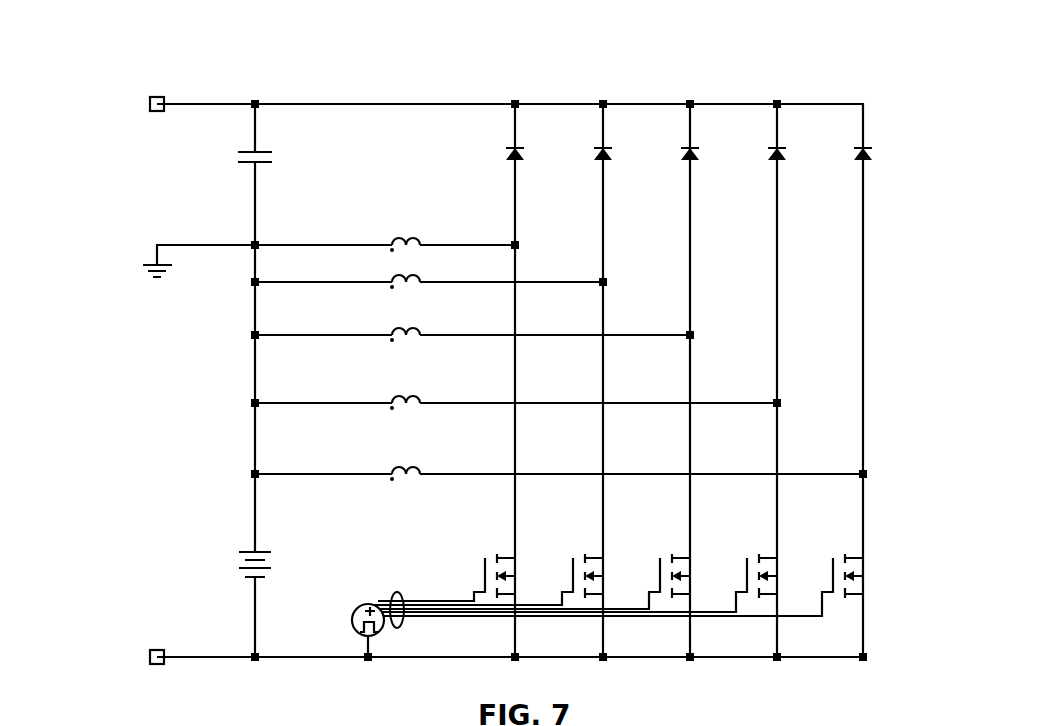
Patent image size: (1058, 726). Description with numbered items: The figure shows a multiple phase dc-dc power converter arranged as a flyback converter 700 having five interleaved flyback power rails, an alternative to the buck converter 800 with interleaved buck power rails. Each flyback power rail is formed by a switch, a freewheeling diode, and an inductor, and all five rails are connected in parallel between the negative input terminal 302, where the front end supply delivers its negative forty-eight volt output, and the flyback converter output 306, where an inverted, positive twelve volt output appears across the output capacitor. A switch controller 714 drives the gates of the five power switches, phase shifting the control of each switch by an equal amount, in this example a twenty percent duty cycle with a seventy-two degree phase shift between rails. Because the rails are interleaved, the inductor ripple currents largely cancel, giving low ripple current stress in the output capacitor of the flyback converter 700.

The flyback converter 700 is at (134, 30).
The flyback converter output 306 is at (160, 97).
The -48V input terminal 302 is at (160, 665).
The switch controller 714 is at (353, 614).
The buck converter 800 is at (130, 720).